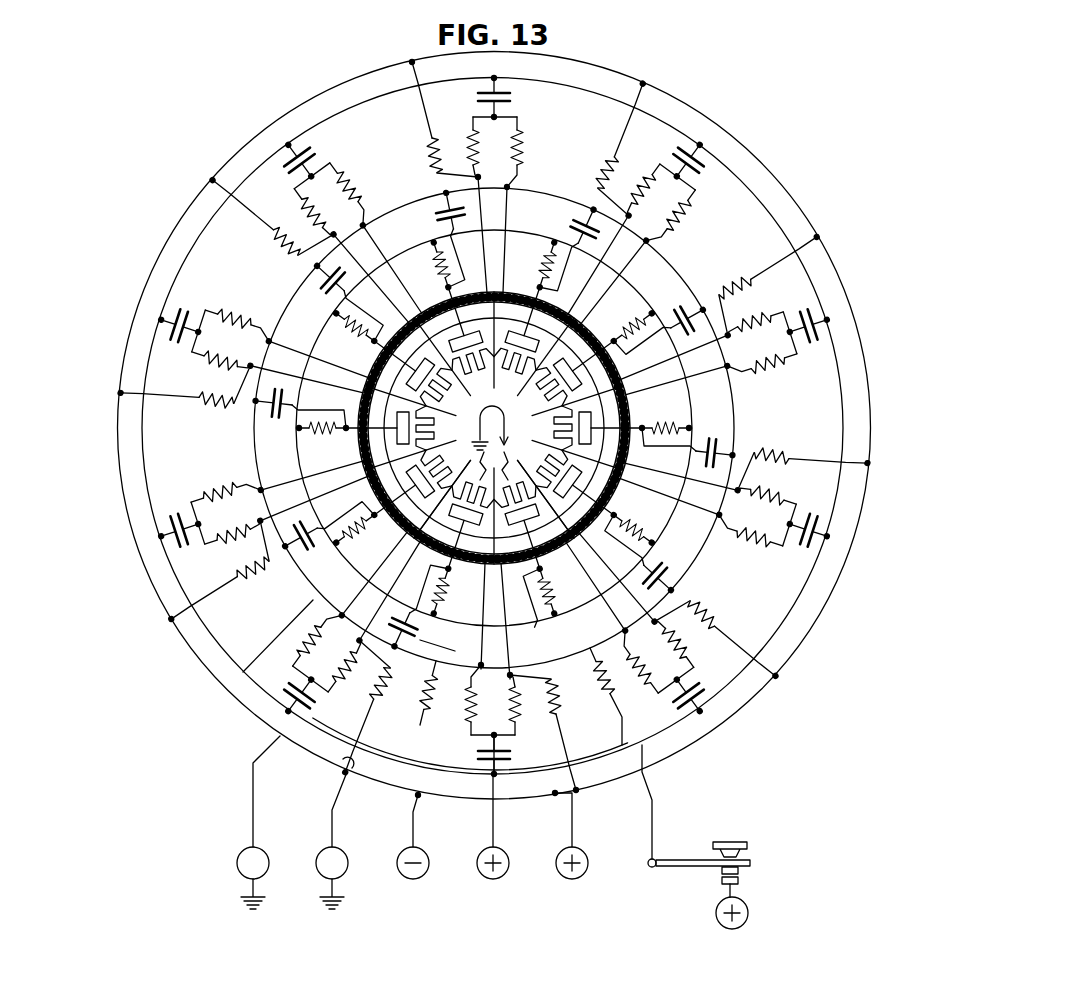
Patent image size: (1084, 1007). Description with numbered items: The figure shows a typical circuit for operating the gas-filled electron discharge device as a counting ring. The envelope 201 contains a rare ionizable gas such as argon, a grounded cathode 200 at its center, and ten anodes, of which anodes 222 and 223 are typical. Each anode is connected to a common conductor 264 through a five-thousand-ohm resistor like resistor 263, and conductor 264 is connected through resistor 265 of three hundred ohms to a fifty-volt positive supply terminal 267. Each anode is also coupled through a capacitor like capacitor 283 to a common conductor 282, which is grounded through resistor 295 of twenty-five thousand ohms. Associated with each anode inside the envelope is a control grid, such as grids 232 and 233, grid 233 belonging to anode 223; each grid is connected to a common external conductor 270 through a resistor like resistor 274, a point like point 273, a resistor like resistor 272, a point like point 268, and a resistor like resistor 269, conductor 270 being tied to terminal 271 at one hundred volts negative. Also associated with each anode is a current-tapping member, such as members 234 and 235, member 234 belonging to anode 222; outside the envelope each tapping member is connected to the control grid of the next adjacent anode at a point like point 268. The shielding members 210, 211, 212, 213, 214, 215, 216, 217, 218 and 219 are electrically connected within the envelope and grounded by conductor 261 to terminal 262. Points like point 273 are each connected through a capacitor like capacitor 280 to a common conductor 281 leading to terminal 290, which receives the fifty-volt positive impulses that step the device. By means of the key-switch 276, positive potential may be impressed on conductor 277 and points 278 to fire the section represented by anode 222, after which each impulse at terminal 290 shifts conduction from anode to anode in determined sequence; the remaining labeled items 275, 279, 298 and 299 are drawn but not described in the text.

The grounded cathode 200 is at (500, 408).
The envelope 201 is at (362, 430).
The shielding member 210 is at (516, 510).
The shielding member 211 is at (466, 505).
The shielding member 212 is at (412, 480).
The shielding member 213 is at (396, 424).
The shielding member 214 is at (412, 372).
The shielding member 215 is at (482, 316).
The shielding member 216 is at (530, 318).
The shielding member 217 is at (586, 368).
The shielding member 218 is at (594, 424).
The shielding member 219 is at (578, 482).
The anode 222 is at (532, 520).
The anode 223 is at (468, 522).
The control grid 232 is at (512, 448).
The control grid 233 is at (474, 454).
The current-tapping member 234 is at (513, 466).
The current-tapping member 235 is at (487, 466).
The conductor 261 is at (492, 426).
The terminal 262 is at (275, 848).
The resistor 263 is at (446, 572).
The common conductor 264 is at (546, 570).
The resistor 265 is at (608, 698).
The positive electric potential supply terminal 267 is at (578, 862).
The point 268 is at (350, 662).
The resistor 269 is at (552, 700).
The common conductor 270 is at (467, 796).
The terminal 271 is at (418, 862).
The resistor 272 is at (516, 704).
The point 273 is at (486, 752).
The resistor 274 is at (474, 712).
The voltage source 275 is at (744, 910).
The key-switch 276 is at (690, 848).
The conductor 277 is at (652, 804).
The point 278 is at (676, 692).
The resistor 279 is at (646, 668).
The capacitor 280 is at (500, 752).
The common conductor 281 is at (446, 770).
The common conductor 282 is at (446, 648).
The capacitor 283 is at (418, 622).
The terminal 290 is at (500, 862).
The resistor 295 is at (432, 684).
The ground terminal 298 is at (338, 862).
The crossover 299 is at (342, 756).